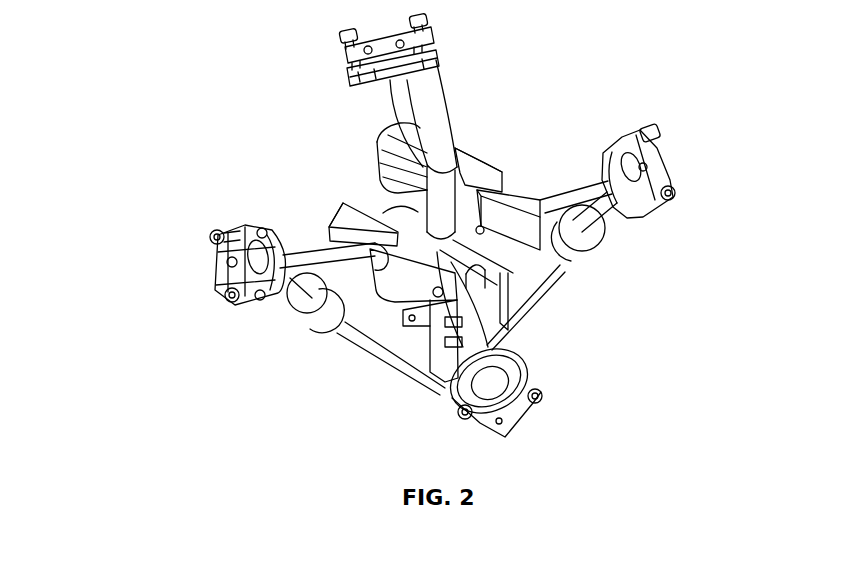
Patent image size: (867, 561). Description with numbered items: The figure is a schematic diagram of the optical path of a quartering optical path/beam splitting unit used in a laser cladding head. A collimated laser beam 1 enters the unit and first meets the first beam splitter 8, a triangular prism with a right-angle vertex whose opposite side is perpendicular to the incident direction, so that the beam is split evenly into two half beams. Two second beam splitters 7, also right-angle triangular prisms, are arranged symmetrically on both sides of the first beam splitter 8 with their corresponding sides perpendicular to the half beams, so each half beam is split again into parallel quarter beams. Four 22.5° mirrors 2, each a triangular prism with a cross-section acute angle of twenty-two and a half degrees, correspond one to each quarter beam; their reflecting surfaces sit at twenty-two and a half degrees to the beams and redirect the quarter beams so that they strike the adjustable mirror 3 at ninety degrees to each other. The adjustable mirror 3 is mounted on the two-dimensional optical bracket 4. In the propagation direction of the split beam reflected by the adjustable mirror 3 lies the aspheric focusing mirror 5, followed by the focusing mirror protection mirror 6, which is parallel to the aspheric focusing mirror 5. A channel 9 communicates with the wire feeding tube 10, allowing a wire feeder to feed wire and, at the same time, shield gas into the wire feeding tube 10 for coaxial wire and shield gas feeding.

The collimated laser beam 1 is at (440, 190).
The 22.5° mirror 2 is at (353, 221).
The adjustable mirror 3 is at (209, 233).
The two-dimensional optical bracket 4 is at (227, 278).
The aspheric focusing mirror 5 is at (303, 313).
The focusing mirror protection mirror 6 is at (323, 325).
The second beam splitter 7 is at (470, 167).
The first beam splitter 8 is at (450, 243).
The channel 9 is at (478, 268).
The wire feeding tube 10 is at (440, 357).